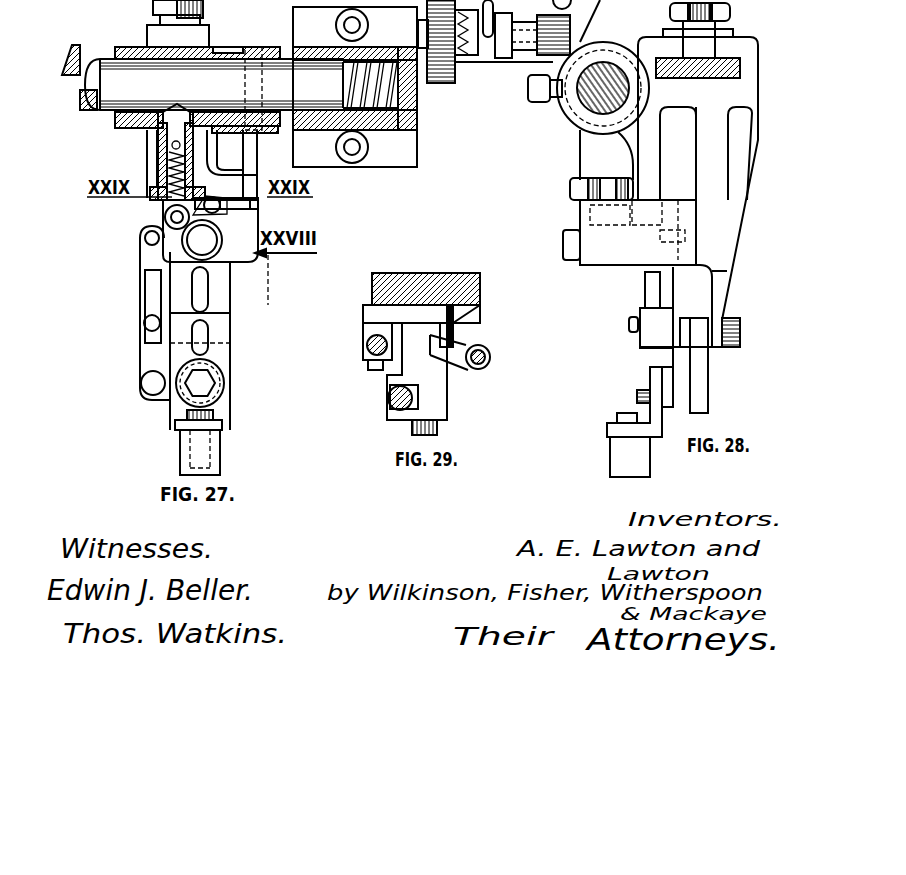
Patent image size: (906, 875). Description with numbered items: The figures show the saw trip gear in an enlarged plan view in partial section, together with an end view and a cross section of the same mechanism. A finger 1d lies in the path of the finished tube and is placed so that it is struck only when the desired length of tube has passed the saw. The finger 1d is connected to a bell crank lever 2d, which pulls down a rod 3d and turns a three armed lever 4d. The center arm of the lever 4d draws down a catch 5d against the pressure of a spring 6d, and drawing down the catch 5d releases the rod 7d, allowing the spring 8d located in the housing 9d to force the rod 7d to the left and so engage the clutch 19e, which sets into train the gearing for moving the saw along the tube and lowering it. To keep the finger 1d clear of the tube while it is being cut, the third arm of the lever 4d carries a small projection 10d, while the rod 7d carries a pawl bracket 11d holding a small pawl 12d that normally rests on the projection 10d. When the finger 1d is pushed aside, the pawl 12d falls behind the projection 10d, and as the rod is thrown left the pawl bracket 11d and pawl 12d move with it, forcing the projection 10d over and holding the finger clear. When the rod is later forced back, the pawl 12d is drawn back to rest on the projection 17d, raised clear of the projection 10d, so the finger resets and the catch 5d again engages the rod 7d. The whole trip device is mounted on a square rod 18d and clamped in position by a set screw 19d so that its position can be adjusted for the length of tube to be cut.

In FIG. 27, the finger 1d is at (213, 445).
In FIG. 27, the bell crank lever 2d is at (175, 402).
In FIG. 27, the rod 3d is at (152, 288).
In FIG. 27, the three armed lever 4d is at (222, 250).
In FIG. 27, the catch 5d is at (172, 123).
In FIG. 27, the spring 6d is at (168, 153).
In FIG. 27, the rod 7d is at (214, 88).
In FIG. 27, the spring 8d is at (345, 72).
In FIG. 27, the housing 9d is at (355, 148).
In FIG. 29, the projection 10d is at (480, 300).
In FIG. 27, the pawl bracket 11d is at (255, 158).
In FIG. 27, the pawl 12d is at (245, 208).
In FIG. 29, the pawl 12d is at (447, 357).
In FIG. 29, the projection 17d is at (452, 343).
In FIG. 27, the square rod 18d is at (84, 68).
In FIG. 28, the square rod 18d is at (736, 80).
In FIG. 27, the set screw 19d is at (204, 11).
In FIG. 28, the set screw 19d is at (730, 14).
In FIG. 28, the clutch 19e is at (470, 52).